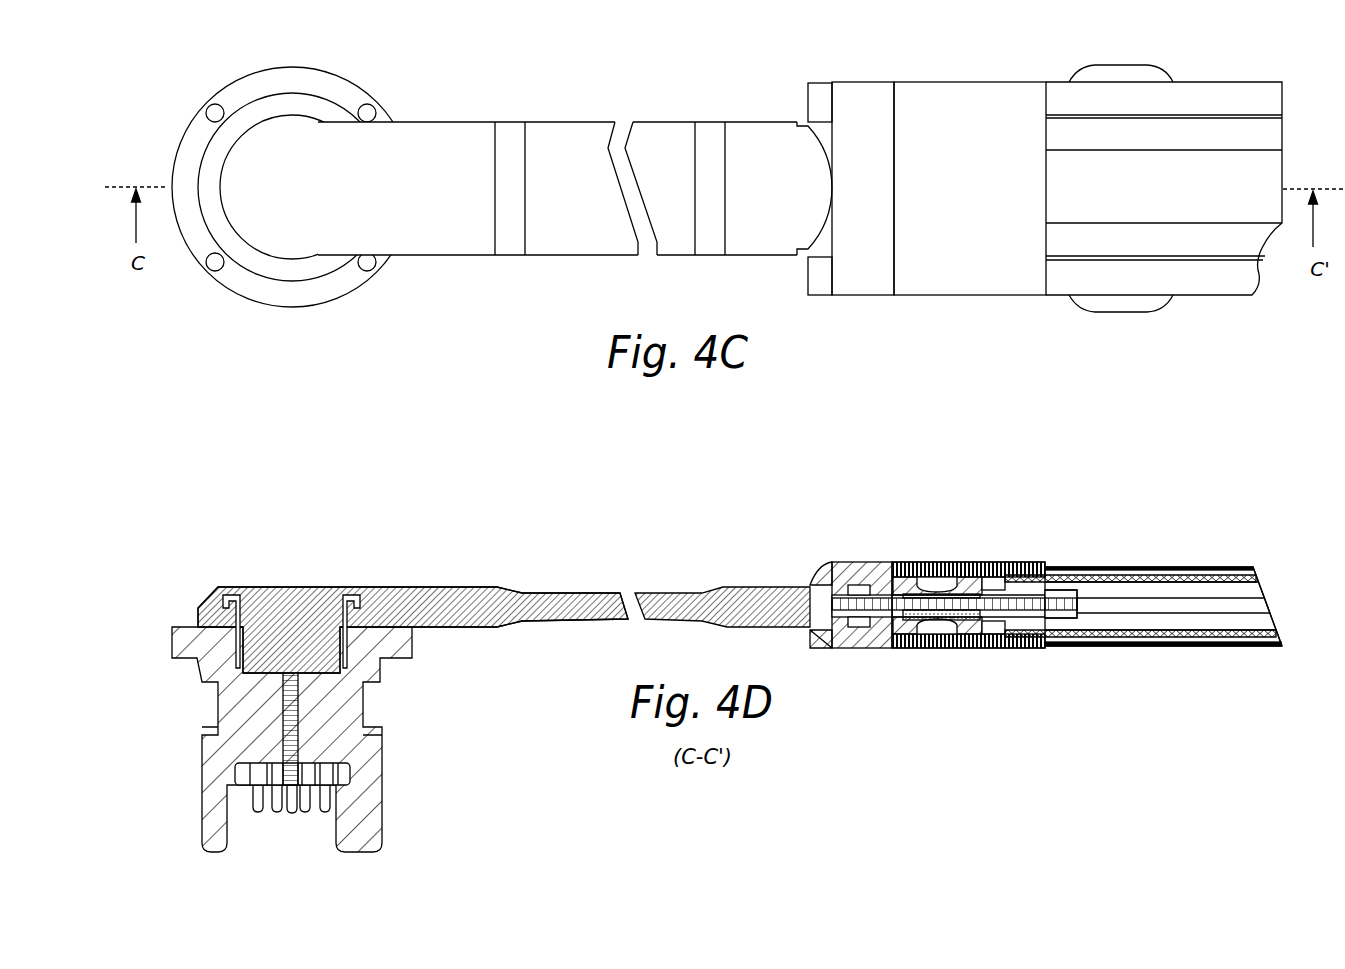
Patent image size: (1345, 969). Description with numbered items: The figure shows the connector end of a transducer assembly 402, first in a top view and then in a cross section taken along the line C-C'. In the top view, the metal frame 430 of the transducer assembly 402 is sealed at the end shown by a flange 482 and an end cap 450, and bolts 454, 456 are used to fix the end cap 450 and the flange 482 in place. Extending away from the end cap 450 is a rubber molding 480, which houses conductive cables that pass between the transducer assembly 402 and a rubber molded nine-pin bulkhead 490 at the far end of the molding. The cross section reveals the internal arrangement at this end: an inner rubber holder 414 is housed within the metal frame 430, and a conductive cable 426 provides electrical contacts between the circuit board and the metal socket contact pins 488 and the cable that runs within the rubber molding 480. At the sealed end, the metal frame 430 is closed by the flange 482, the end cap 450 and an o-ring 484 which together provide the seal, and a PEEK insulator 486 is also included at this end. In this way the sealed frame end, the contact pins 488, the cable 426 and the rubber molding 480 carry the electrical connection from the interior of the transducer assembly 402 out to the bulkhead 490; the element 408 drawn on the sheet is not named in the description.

In FIG. 4D, the transducer assembly 402 is at (1143, 652).
In FIG. 4D, the outer sheath 408 is at (1140, 588).
In FIG. 4D, the inner rubber holder 414 is at (1230, 646).
In FIG. 4D, the conductive cable 426 is at (1258, 607).
In FIG. 4C, the metal frame 430 is at (1134, 199).
In FIG. 4D, the metal frame 430 is at (1148, 646).
In FIG. 4C, the end cap 450 is at (846, 247).
In FIG. 4D, the end cap 450 is at (858, 652).
In FIG. 4C, the bolt 454 is at (817, 102).
In FIG. 4D, the bolt 454 is at (818, 640).
In FIG. 4C, the bolt 456 is at (817, 277).
In FIG. 4C, the rubber molding 480 is at (414, 199).
In FIG. 4D, the rubber molding 480 is at (468, 595).
In FIG. 4C, the flange 482 is at (931, 247).
In FIG. 4D, the flange 482 is at (905, 562).
In FIG. 4D, the o-ring 484 is at (935, 562).
In FIG. 4D, the PEEK insulator 486 is at (970, 648).
In FIG. 4D, the metal socket contact pins 488 is at (1065, 565).
In FIG. 4C, the rubber molded 9-pin bulkhead 490 is at (172, 313).
In FIG. 4D, the rubber molded 9-pin bulkhead 490 is at (413, 553).